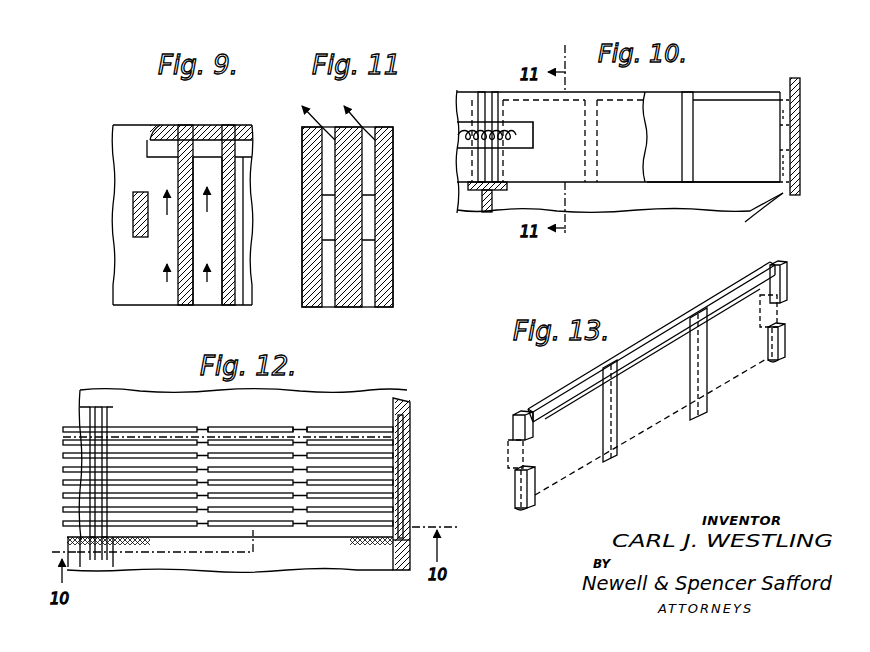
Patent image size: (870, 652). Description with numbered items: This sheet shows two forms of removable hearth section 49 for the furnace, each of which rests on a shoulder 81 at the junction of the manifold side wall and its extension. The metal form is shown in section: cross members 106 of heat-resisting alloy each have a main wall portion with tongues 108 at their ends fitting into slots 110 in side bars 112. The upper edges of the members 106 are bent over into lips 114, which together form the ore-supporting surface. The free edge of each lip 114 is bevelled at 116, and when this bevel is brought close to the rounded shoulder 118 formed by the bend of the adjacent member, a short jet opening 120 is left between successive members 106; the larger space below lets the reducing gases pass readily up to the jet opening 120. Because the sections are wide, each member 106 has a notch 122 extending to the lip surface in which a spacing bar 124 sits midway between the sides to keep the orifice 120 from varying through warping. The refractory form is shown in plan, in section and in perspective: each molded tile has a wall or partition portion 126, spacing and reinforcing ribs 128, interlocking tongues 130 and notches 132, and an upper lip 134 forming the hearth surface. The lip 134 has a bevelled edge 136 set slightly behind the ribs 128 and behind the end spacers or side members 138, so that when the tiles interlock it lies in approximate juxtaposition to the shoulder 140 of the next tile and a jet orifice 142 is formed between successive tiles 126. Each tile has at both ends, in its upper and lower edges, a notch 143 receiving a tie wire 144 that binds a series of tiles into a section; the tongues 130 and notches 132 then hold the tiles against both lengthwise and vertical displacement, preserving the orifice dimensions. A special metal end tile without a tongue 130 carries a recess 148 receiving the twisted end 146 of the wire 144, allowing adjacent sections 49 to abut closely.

In FIG. 10, the hearth section 49 is at (462, 88).
In FIG. 12, the hearth section 49 is at (196, 424).
In FIG. 10, the shoulder 81 is at (745, 222).
In FIG. 9, the cross members 106 is at (222, 290).
In FIG. 9, the tongues 108 is at (140, 237).
In FIG. 9, the slots 110 is at (133, 212).
In FIG. 9, the side bars 112 is at (113, 182).
In FIG. 9, the lips 114 is at (156, 128).
In FIG. 9, the bevelled edge 116 is at (148, 133).
In FIG. 9, the rounded shoulder 118 is at (190, 137).
In FIG. 9, the jet opening 120 is at (213, 111).
In FIG. 9, the notch 122 is at (175, 168).
In FIG. 9, the spacing bar 124 is at (147, 150).
In FIG. 10, the wall or partition portion 126 is at (703, 182).
In FIG. 13, the wall or partition portion 126 is at (562, 494).
In FIG. 10, the spacing and reinforcing ribs 128 is at (693, 125).
In FIG. 12, the spacing and reinforcing ribs 128 is at (207, 512).
In FIG. 13, the spacing and reinforcing ribs 128 is at (615, 422).
In FIG. 12, the interlocking tongues 130 is at (107, 430).
In FIG. 13, the interlocking tongues 130 is at (510, 445).
In FIG. 10, the notches 132 is at (790, 148).
In FIG. 13, the notches 132 is at (517, 472).
In FIG. 10, the upper lip 134 is at (720, 90).
In FIG. 12, the upper lip 134 is at (258, 467).
In FIG. 13, the upper lip 134 is at (567, 385).
In FIG. 10, the bevelled edge 136 is at (742, 99).
In FIG. 12, the bevelled edge 136 is at (160, 425).
In FIG. 13, the bevelled edge 136 is at (575, 397).
In FIG. 10, the end spacers or side members 138 is at (786, 124).
In FIG. 12, the end spacers or side members 138 is at (405, 516).
In FIG. 13, the end spacers or side members 138 is at (541, 497).
In FIG. 11, the shoulder 140 is at (362, 127).
In FIG. 12, the shoulder 140 is at (222, 414).
In FIG. 13, the shoulder 140 is at (547, 406).
In FIG. 11, the jet orifice 142 is at (366, 130).
In FIG. 12, the jet orifice 142 is at (325, 457).
In FIG. 13, the jet orifice 142 is at (527, 416).
In FIG. 10, the notch 143 is at (792, 108).
In FIG. 12, the notch 143 is at (408, 468).
In FIG. 13, the notch 143 is at (525, 505).
In FIG. 10, the tie wire 144 is at (480, 92).
In FIG. 12, the tie wire 144 is at (102, 407).
In FIG. 10, the twisted end 146 is at (530, 134).
In FIG. 12, the twisted end 146 is at (107, 570).
In FIG. 10, the recess 148 is at (520, 150).
In FIG. 12, the recess 148 is at (353, 545).